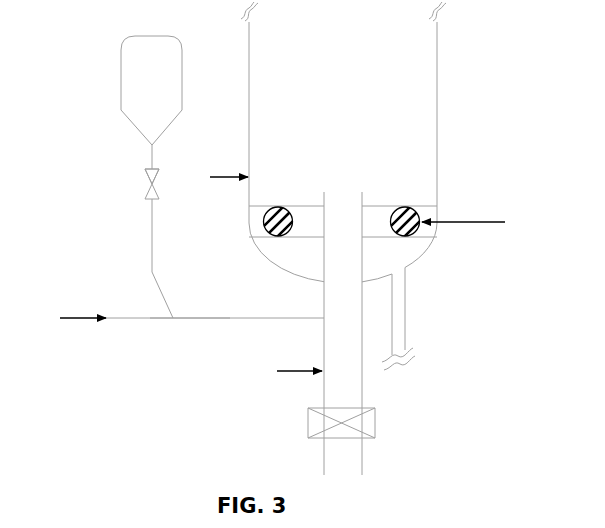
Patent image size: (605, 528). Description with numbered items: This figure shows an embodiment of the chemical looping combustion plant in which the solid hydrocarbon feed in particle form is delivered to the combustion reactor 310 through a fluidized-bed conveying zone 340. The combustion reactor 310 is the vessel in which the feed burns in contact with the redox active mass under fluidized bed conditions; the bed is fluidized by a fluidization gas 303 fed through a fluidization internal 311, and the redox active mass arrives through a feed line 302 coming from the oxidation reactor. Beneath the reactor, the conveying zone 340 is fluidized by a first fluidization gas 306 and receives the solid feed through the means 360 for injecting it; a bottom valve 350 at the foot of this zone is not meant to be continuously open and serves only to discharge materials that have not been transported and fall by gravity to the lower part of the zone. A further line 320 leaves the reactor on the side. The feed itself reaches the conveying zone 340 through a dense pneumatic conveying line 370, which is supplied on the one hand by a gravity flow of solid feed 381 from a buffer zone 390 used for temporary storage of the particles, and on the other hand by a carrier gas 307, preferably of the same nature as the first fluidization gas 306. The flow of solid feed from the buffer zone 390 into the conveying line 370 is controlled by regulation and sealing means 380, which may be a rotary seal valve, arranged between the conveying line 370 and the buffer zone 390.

The feed line 302 is at (228, 177).
The fluidization gas 303 is at (462, 222).
The first fluidization gas 306 is at (288, 372).
The carrier gas 307 is at (91, 318).
The combustion reactor 310 is at (436, 72).
The fluidization internal 311 is at (384, 206).
The side outlet pipe 320 is at (406, 310).
The conveying zone 340 is at (323, 343).
The bottom valve 350 is at (310, 438).
The means for injecting the solid hydrocarbon feed 360 is at (322, 316).
The dense pneumatic conveying line 370 is at (217, 318).
The regulation and sealing means 380 is at (147, 192).
The gravity flow of solid feed 381 is at (152, 263).
The buffer zone 390 is at (143, 35).